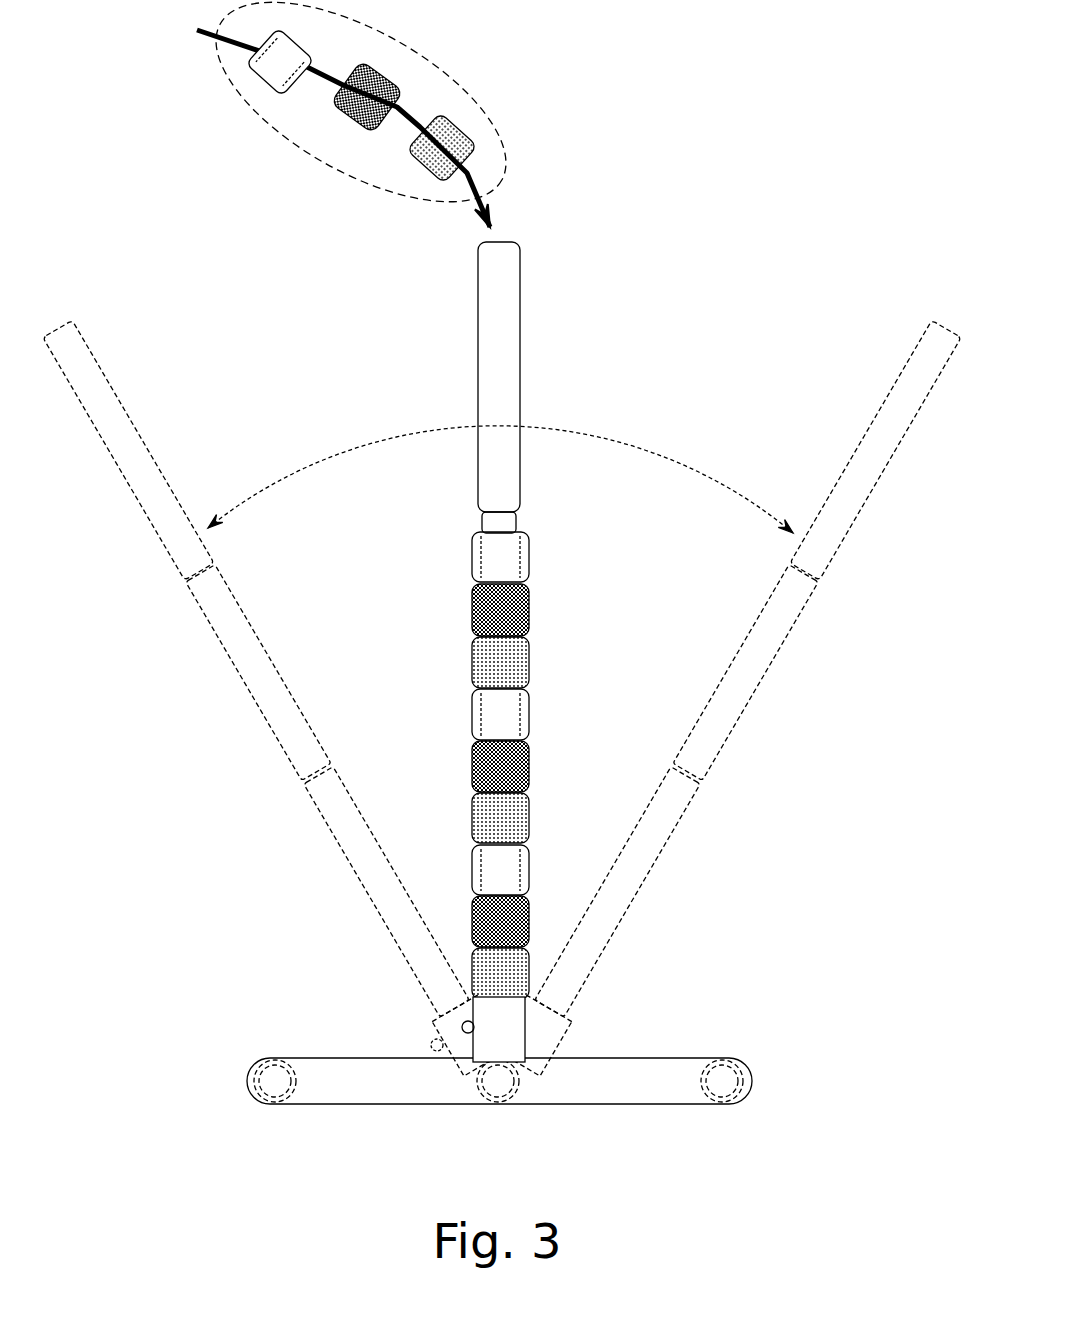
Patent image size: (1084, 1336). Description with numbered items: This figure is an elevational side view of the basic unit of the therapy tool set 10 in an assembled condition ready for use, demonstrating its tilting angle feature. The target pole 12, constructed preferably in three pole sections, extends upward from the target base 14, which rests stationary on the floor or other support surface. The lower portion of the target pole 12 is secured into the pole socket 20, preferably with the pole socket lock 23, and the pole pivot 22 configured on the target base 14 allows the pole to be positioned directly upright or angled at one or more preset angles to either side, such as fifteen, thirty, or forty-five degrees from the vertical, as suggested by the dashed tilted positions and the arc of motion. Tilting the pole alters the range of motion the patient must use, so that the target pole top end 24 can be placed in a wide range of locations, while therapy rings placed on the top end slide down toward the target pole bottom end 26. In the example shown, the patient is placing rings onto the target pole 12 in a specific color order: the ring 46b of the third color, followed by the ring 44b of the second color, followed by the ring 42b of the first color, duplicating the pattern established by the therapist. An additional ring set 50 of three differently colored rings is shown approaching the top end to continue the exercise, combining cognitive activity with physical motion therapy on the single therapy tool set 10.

The therapy tool set 10 is at (752, 305).
The target pole 12 is at (466, 390).
The target base 14 is at (320, 1058).
The pole socket 20 is at (513, 1030).
The pole pivot 22 is at (505, 1106).
The pole socket lock 23 is at (462, 1027).
The target pole top end 24 is at (530, 283).
The target pole bottom end 26 is at (552, 995).
The ring of a first color 42b is at (532, 712).
The ring of a second color 44b is at (468, 767).
The ring of a third color 46b is at (532, 818).
The ring set 50 is at (318, 158).